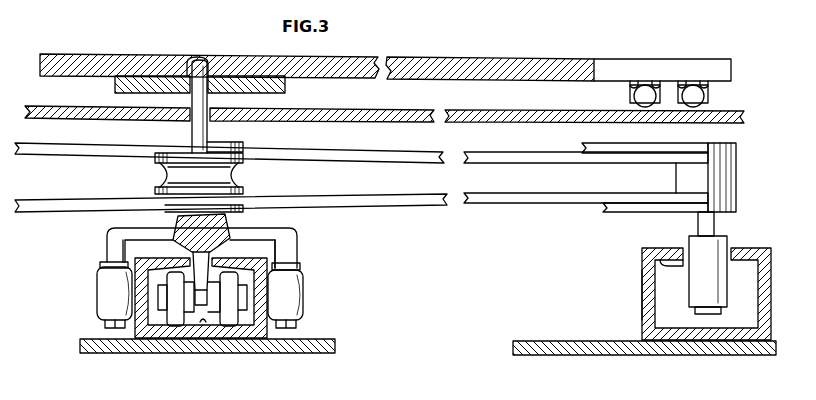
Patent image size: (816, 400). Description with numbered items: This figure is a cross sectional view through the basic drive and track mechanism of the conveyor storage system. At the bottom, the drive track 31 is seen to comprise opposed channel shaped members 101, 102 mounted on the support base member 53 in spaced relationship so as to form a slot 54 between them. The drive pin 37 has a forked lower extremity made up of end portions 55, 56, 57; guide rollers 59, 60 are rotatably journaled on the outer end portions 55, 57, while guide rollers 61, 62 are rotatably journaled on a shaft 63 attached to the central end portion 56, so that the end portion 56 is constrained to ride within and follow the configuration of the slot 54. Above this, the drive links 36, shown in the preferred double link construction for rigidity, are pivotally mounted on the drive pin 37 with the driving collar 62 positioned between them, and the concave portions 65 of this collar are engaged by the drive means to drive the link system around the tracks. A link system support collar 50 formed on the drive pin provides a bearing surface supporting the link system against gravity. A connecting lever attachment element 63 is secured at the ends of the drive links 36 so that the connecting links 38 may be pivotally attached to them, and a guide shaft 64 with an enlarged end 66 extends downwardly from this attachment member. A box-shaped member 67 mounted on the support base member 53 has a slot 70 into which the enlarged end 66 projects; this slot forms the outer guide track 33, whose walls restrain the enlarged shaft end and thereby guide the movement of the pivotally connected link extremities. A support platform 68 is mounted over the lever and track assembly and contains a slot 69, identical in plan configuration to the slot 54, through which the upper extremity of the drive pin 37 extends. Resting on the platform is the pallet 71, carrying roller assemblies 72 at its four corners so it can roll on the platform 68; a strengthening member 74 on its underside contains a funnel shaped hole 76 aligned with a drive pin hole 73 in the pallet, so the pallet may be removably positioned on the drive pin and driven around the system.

The drive track 31 is at (276, 240).
The outer guide track 33 is at (640, 257).
The drive links 36 is at (116, 146).
The drive pin 37 is at (192, 133).
The connecting links 38 is at (614, 148).
The link system support collar 50 is at (232, 216).
The support base member 53 is at (255, 347).
The slot 54 is at (186, 262).
The forked end portion 55 is at (110, 236).
The forked end portion 56 is at (206, 260).
The forked end portion 57 is at (296, 258).
The guide roller 59 is at (100, 278).
The guide roller 60 is at (302, 288).
The guide roller 61 is at (176, 328).
The guide roller / driving collar 62 is at (244, 172).
The shaft / connecting lever attachment element 63 is at (732, 172).
The guide shaft 64 is at (714, 228).
The concave portions 65 is at (158, 176).
The enlarged end 66 is at (712, 288).
The box-shaped member 67 is at (650, 300).
The support platform 68 is at (388, 108).
The slot 69 is at (208, 122).
The slot 70 is at (686, 252).
The pallet 71 is at (478, 64).
The roller assemblies 72 is at (706, 98).
The drive pin hole 73 is at (203, 62).
The strengthening member 74 is at (116, 88).
The funnel shaped hole 76 is at (190, 70).
The channel shaped member 101 is at (156, 340).
The channel shaped member 102 is at (278, 328).